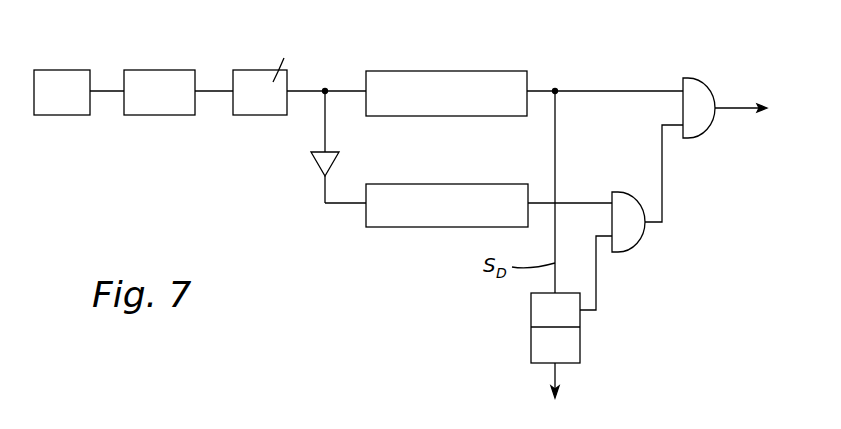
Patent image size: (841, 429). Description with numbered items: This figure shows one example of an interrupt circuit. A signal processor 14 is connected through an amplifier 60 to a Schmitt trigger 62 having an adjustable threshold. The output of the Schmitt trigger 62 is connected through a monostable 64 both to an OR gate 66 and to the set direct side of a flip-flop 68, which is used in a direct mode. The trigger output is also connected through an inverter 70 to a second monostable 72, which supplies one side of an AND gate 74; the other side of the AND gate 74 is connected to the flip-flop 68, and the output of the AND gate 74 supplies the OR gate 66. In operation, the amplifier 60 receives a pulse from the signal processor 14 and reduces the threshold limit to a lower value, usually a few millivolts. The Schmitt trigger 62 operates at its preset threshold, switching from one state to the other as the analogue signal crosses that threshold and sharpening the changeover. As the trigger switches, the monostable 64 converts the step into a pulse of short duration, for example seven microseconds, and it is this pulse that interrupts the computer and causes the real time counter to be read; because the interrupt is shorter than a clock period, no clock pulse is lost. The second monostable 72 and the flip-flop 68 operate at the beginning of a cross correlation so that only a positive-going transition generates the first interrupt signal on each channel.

The signal processor 14 is at (62, 70).
The amplifier 60 is at (157, 70).
The Schmitt trigger 62 is at (259, 70).
The monostable 64 is at (437, 70).
The OR gate 66 is at (700, 78).
The flip-flop 68 is at (521, 323).
The inverter 70 is at (311, 158).
The second monostable 72 is at (410, 228).
The AND gate 74 is at (618, 192).